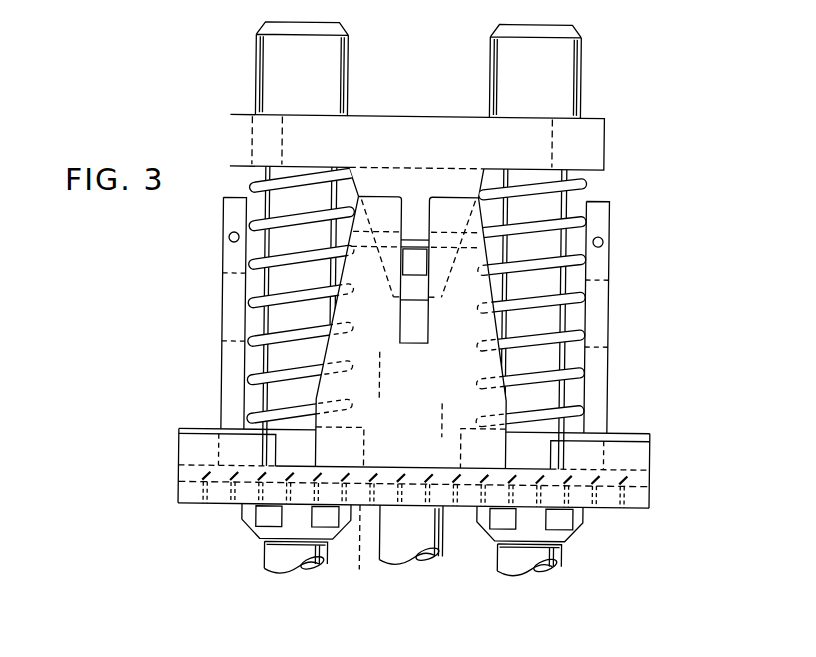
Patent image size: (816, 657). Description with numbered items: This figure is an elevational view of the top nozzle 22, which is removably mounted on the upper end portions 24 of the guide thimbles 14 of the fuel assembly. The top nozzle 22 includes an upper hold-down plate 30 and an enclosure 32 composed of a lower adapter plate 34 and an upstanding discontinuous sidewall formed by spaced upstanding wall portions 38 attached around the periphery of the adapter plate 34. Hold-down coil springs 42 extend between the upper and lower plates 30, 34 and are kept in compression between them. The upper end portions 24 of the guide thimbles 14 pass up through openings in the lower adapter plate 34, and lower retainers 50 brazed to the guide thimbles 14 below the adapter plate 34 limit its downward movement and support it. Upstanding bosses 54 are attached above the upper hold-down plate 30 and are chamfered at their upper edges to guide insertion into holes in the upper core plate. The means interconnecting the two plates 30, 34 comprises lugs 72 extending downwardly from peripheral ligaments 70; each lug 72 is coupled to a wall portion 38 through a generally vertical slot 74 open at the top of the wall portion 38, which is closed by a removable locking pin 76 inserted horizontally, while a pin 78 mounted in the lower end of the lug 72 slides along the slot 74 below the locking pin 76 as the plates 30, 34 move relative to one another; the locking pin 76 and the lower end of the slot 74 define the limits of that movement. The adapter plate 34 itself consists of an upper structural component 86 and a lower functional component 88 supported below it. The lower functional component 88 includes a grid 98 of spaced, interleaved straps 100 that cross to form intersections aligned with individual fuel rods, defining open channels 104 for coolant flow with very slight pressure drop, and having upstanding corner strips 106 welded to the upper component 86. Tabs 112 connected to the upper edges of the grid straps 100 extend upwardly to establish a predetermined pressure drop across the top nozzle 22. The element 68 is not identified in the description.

The guide thimble 14 is at (293, 566).
The top nozzle 22 is at (177, 151).
The upper end portion 24 is at (266, 546).
The upper hold-down plate 30 is at (603, 120).
The enclosure 32 is at (610, 400).
The lower adapter plate 34 is at (641, 427).
The upstanding wall portion 38 is at (222, 334).
The hold-down coil spring 42 is at (258, 380).
The lower retainer 50 is at (243, 508).
The upstanding boss 54 is at (253, 67).
The top bar 68 is at (228, 142).
The ligament 70 is at (365, 116).
The lug 72 is at (452, 187).
The vertical slot 74 is at (428, 302).
The locking pin 76 is at (415, 235).
The pin 78 is at (410, 267).
The upper structural component 86 is at (178, 431).
The lower functional component 88 is at (177, 497).
The grid 98 is at (193, 508).
The strap 100 is at (620, 486).
The open channel 104 is at (359, 554).
The corner strip 106 is at (180, 480).
The tab 112 is at (462, 475).